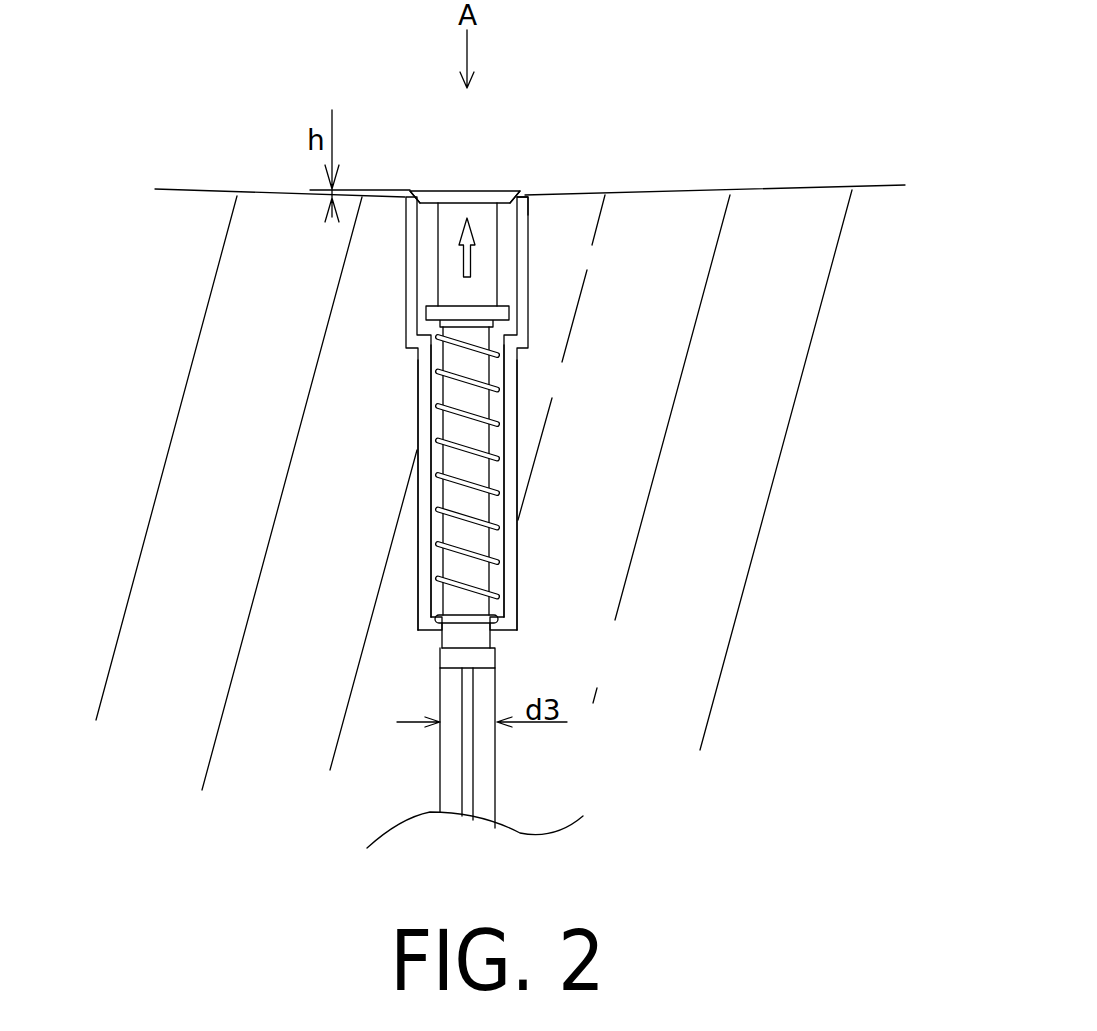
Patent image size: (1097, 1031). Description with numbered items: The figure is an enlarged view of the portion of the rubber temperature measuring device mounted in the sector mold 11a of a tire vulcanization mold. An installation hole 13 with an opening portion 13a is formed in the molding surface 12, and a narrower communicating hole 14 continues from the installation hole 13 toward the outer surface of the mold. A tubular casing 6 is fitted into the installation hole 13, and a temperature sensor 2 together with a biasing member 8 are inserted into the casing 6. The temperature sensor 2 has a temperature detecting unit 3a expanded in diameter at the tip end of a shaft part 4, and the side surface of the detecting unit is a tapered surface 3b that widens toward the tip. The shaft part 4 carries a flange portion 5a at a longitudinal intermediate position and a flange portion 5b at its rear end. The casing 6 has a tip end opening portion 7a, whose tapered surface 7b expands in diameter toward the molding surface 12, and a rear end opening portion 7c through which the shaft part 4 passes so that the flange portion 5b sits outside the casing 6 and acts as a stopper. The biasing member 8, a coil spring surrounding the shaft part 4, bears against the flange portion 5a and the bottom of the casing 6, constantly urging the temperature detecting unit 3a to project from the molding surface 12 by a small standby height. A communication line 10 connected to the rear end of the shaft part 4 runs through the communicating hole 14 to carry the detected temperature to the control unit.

The temperature sensor 2 is at (469, 463).
The temperature detecting unit 3a is at (472, 191).
The tapered surface 3b is at (518, 207).
The shaft part 4 is at (477, 443).
The flange portion 5a is at (509, 313).
The flange portion 5b is at (487, 658).
The casing 6 is at (380, 318).
The tip end opening portion 7a is at (518, 190).
The tapered surface 7b is at (422, 190).
The rear end opening portion 7c is at (437, 647).
The biasing member 8 is at (477, 520).
The communication line 10 is at (468, 770).
The sector mold 11a is at (258, 175).
The molding surface 12 is at (704, 190).
The installation hole 13 is at (420, 471).
The opening portion 13a is at (523, 197).
The communicating hole 14 is at (445, 793).